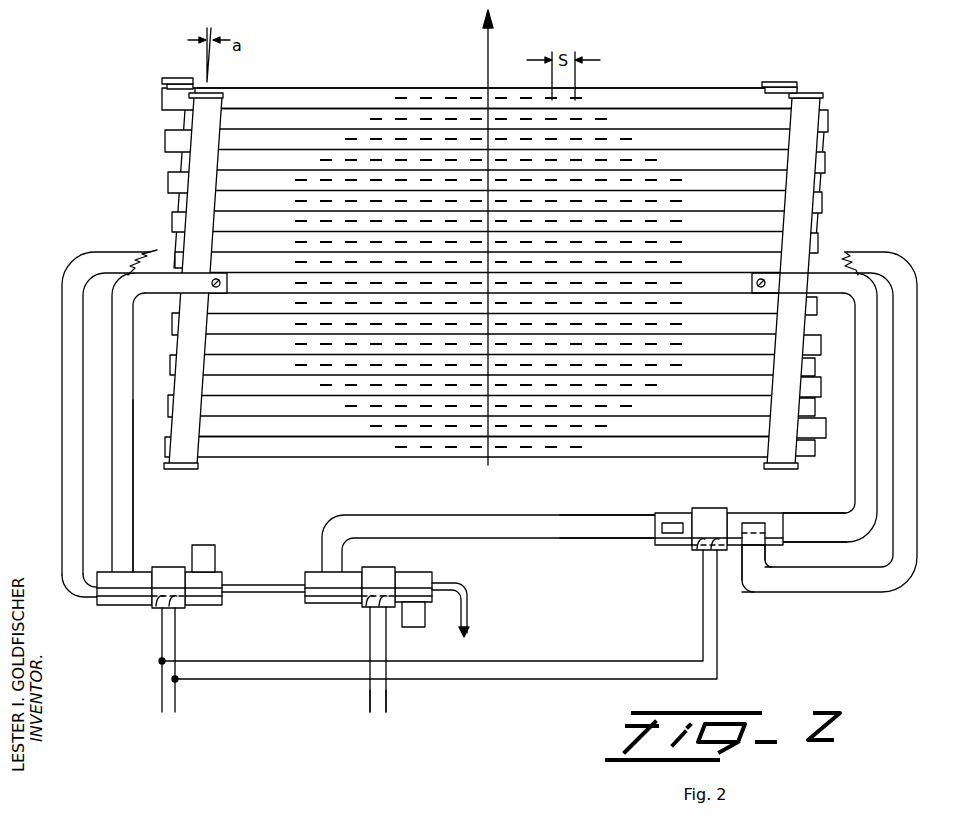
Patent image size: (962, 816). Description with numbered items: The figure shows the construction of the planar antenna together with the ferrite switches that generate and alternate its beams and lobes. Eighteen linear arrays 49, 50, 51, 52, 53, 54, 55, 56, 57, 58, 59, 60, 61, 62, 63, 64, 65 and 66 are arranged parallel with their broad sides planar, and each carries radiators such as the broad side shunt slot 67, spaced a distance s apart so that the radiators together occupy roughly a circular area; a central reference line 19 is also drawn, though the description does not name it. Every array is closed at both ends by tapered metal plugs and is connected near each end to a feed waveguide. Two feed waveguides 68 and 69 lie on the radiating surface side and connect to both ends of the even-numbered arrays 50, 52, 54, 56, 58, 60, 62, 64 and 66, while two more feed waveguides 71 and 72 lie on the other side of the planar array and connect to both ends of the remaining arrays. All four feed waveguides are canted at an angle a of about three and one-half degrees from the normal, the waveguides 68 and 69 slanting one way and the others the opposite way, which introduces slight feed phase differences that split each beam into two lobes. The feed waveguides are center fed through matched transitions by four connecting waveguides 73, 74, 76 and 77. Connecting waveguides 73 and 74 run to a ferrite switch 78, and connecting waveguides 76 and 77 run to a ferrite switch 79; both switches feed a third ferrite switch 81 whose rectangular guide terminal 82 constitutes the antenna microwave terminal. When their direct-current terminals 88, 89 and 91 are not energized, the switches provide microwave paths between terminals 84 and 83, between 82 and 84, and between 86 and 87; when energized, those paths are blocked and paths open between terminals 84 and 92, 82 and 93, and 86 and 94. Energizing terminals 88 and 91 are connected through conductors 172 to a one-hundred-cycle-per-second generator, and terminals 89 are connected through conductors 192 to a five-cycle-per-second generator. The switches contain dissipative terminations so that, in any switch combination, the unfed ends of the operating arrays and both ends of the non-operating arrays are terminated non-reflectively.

The central axis 19 is at (488, 35).
The linear array 49 is at (697, 88).
The linear array 50 is at (830, 122).
The linear array 51 is at (165, 141).
The linear array 52 is at (827, 163).
The linear array 53 is at (168, 183).
The linear array 54 is at (824, 203).
The linear array 55 is at (172, 222).
The linear array 56 is at (818, 243).
The linear array 57 is at (176, 258).
The linear array 58 is at (715, 286).
The linear array 59 is at (817, 306).
The linear array 60 is at (172, 325).
The linear array 61 is at (816, 368).
The linear array 62 is at (170, 365).
The linear array 63 is at (815, 408).
The linear array 64 is at (168, 405).
The linear array 65 is at (817, 450).
The linear array 66 is at (541, 460).
The broad side shunt slot 67 is at (404, 96).
The feed waveguide 68 is at (195, 469).
The feed waveguide 69 is at (766, 469).
The feed waveguide 71 is at (170, 79).
The feed waveguide 72 is at (790, 82).
The connecting waveguide 73 is at (62, 298).
The connecting waveguide 74 is at (112, 341).
The connecting waveguide 76 is at (856, 470).
The connecting waveguide 77 is at (917, 438).
The ferrite switch 78 is at (180, 567).
The ferrite switch 79 is at (700, 508).
The third ferrite switch 81 is at (388, 567).
The rectangular guide terminal 82 is at (467, 620).
The microwave terminal 83 is at (97, 598).
The microwave terminal 84 is at (245, 586).
The microwave terminal 86 is at (648, 540).
The microwave terminal 87 is at (795, 513).
The direct-current terminals 88 is at (175, 606).
The direct-current terminals 89 is at (386, 606).
The direct-current terminals 91 is at (717, 551).
The microwave terminal 92 is at (133, 551).
The microwave terminal 93 is at (322, 551).
The microwave terminal 94 is at (742, 560).
The conductors 172 is at (162, 690).
The conductors 192 is at (386, 690).